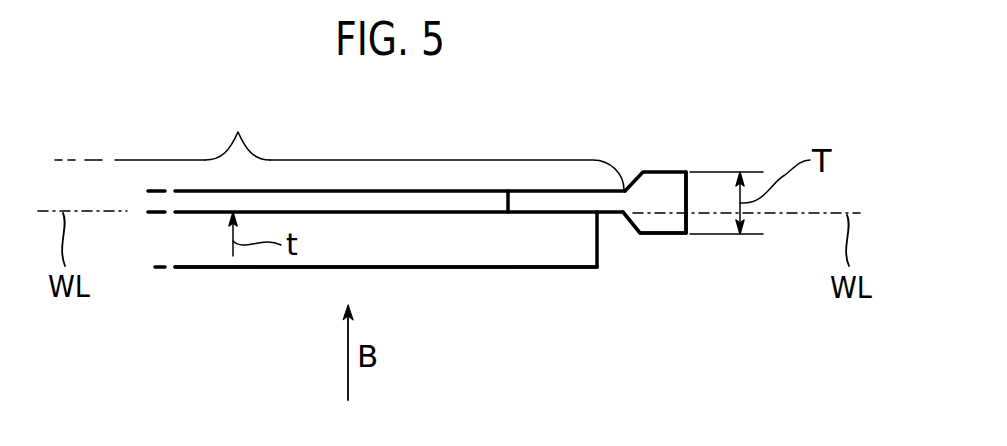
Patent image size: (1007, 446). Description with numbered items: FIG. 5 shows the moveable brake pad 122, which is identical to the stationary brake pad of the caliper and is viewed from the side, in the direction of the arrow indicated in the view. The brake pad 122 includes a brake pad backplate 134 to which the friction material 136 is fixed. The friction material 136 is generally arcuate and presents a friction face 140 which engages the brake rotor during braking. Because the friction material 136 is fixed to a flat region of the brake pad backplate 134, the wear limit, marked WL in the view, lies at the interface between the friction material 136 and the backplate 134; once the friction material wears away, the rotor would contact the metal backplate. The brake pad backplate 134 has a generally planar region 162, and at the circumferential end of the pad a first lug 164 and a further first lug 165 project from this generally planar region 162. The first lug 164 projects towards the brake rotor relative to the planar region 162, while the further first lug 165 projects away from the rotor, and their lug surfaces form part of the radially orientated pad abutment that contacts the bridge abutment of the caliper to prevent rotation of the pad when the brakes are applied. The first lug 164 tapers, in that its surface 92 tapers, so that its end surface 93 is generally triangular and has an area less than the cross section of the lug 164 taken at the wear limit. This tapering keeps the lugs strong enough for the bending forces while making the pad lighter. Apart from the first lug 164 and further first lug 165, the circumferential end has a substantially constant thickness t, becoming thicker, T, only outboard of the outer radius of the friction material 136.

The moveable brake pad 122 is at (546, 138).
The brake pad backplate 134 is at (380, 205).
The friction material 136 is at (515, 252).
The friction face 140 is at (440, 268).
The generally planar region 162 is at (233, 190).
The first lug 164 is at (675, 235).
The further first lug 165 is at (662, 172).
The surface 92 is at (630, 227).
The end surface 93 is at (652, 235).